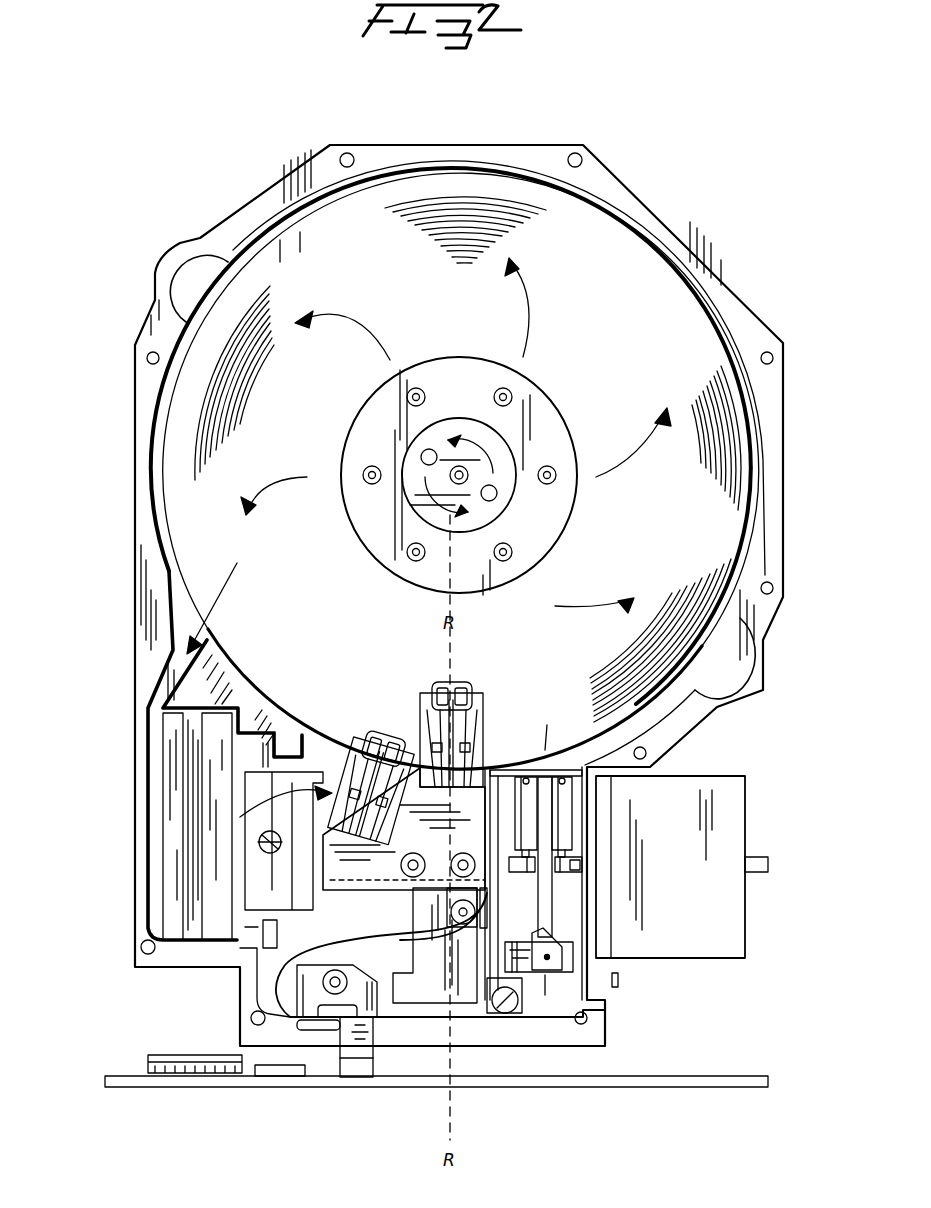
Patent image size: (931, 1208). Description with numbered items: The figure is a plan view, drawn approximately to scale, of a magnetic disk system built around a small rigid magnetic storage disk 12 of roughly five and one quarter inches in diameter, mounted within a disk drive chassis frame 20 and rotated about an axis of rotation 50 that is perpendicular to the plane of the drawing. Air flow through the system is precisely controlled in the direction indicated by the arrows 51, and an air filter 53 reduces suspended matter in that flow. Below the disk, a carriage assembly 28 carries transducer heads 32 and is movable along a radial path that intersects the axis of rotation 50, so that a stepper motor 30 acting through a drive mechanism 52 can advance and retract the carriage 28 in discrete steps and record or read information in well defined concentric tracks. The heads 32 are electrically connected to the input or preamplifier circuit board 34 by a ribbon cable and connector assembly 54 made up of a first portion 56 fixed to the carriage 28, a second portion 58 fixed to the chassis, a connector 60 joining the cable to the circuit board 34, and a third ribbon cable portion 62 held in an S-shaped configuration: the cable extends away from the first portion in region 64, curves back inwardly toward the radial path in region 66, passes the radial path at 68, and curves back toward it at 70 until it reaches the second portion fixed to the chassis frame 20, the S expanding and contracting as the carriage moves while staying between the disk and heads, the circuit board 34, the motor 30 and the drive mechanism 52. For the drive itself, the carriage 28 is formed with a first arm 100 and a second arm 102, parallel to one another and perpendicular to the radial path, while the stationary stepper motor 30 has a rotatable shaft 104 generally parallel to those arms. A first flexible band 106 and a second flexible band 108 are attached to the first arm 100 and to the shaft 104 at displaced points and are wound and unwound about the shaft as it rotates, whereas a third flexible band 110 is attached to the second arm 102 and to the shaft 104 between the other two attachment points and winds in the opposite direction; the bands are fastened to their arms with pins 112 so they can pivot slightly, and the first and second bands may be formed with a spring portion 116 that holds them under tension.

The rigid magnetic storage disk 12 is at (616, 367).
The disk drive chassis frame 20 is at (768, 571).
The carriage assembly 28 is at (449, 853).
The stepper motor 30 is at (675, 889).
The transducer heads 32 is at (393, 733).
The preamplifier circuit board 34 is at (683, 1075).
The axis of rotation 50 is at (463, 480).
The arrows 51 is at (228, 587).
The drive mechanism 52 is at (545, 913).
The air filter 53 is at (178, 856).
The ribbon cable and connector assembly 54 is at (276, 978).
The first portion 56 is at (347, 882).
The second portion 58 is at (315, 1025).
The connector 60 is at (370, 1048).
The third ribbon cable portion 62 is at (333, 943).
The region 64 is at (480, 912).
The region 66 is at (480, 935).
The crossing point 68 is at (442, 942).
The curve 70 is at (270, 987).
The first arm 100 is at (552, 752).
The second arm 102 is at (520, 1000).
The rotatable shaft 104 is at (578, 863).
The first flexible band 106 is at (526, 872).
The second flexible band 108 is at (570, 872).
The third flexible band 110 is at (549, 957).
The pins 112 is at (526, 780).
The spring portion 116 is at (560, 827).